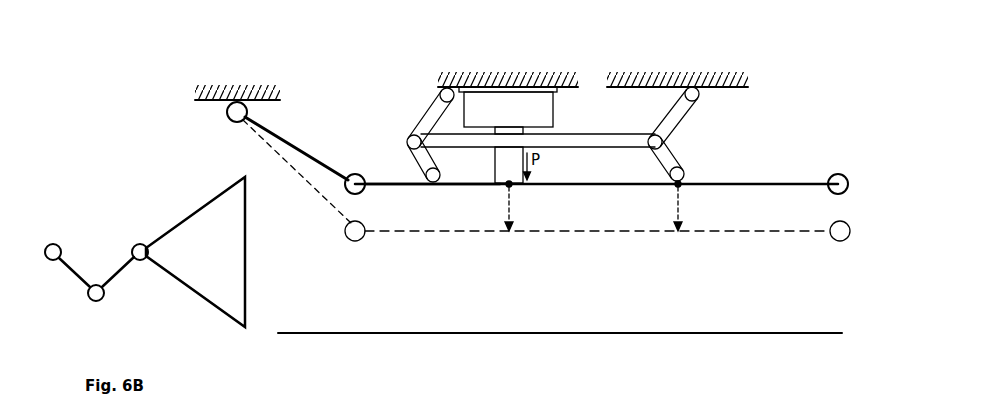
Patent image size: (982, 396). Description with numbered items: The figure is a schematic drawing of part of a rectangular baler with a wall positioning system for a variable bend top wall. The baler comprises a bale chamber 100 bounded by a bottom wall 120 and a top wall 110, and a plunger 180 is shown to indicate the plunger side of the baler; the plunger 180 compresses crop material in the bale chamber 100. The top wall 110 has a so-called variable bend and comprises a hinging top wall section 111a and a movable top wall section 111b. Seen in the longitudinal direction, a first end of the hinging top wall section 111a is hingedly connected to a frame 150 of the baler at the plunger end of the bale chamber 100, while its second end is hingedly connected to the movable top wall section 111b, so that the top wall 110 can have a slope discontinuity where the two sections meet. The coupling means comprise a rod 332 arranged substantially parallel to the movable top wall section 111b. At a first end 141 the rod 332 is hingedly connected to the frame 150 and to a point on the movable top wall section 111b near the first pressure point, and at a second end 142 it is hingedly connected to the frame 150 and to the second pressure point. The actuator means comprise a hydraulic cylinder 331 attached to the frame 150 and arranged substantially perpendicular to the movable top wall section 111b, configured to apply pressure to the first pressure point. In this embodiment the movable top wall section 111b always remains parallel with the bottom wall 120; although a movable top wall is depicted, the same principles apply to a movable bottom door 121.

The bale chamber 100 is at (606, 285).
The top wall 110 is at (555, 171).
The hinging top wall section 111a is at (293, 147).
The movable top wall section 111b is at (412, 183).
The bottom wall 120 is at (575, 309).
The movable bottom door 121 is at (720, 332).
The first end of the rod 141 is at (411, 136).
The second end of the rod 142 is at (663, 142).
The frame 150 is at (235, 92).
The plunger 180 is at (200, 240).
The hydraulic cylinder 331 is at (520, 112).
The rod 332 is at (625, 140).